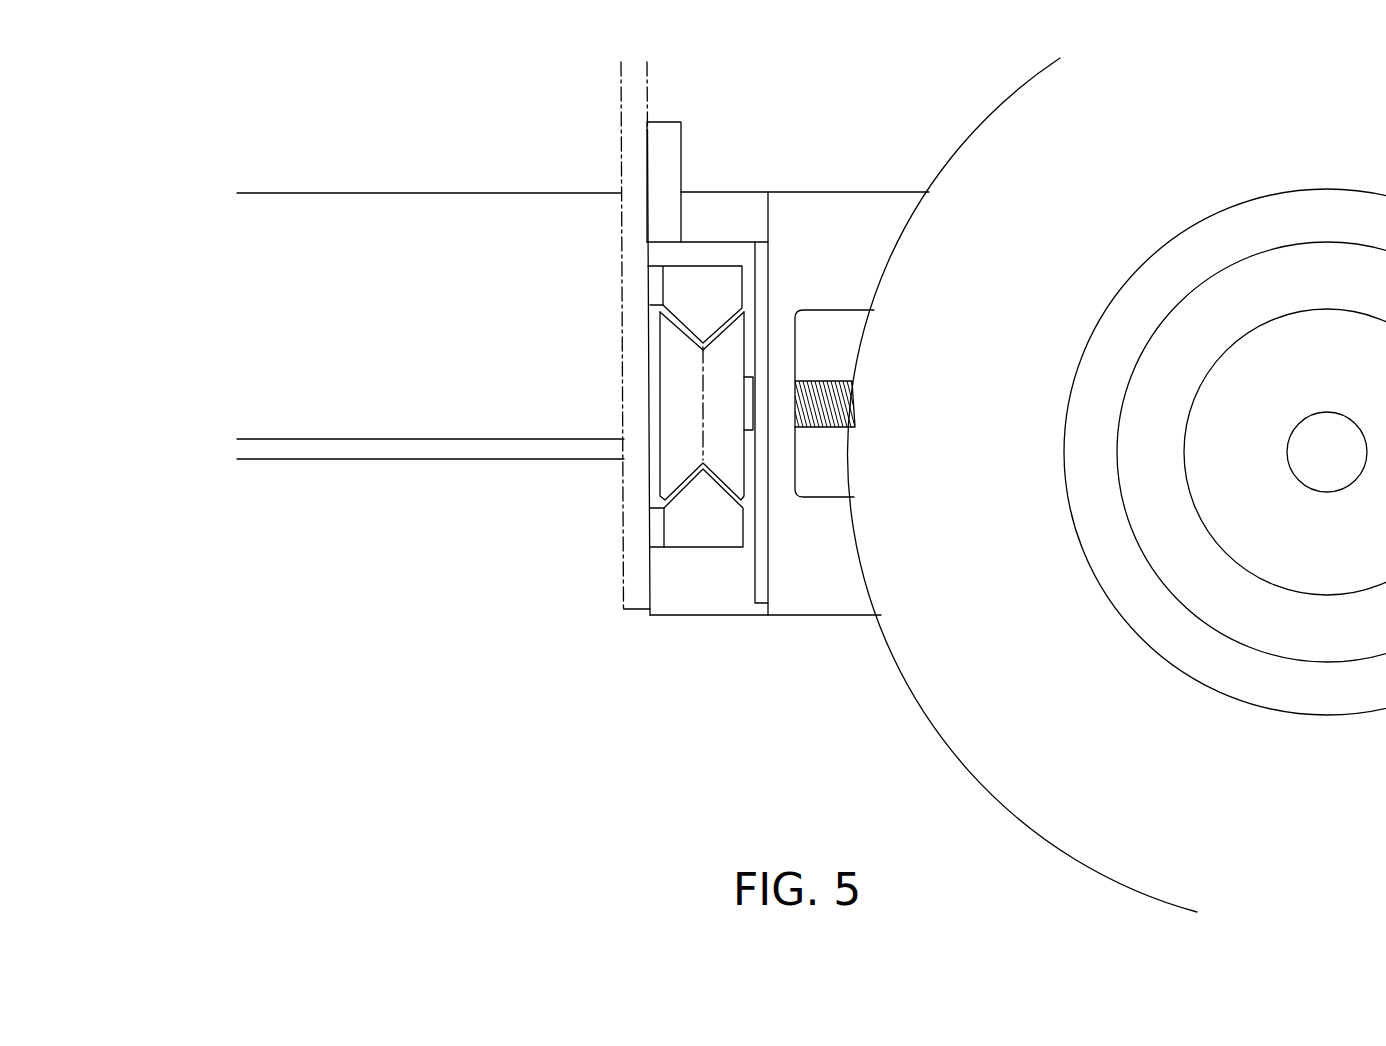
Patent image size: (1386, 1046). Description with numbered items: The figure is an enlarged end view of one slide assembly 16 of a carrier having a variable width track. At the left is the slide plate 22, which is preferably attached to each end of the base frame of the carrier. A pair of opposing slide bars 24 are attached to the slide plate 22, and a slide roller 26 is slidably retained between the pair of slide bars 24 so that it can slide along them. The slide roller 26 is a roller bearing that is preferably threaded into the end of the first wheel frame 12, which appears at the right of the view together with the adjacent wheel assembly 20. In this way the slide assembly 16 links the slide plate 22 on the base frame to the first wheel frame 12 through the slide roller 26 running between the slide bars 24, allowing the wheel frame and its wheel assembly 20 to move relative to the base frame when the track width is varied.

The first wheel frame 12 is at (800, 191).
The slide assembly 16 is at (613, 283).
The wheel assembly 20 is at (983, 118).
The slide plate 22 is at (637, 583).
The slide bar 24 is at (700, 277).
The slide roller 26 is at (665, 472).